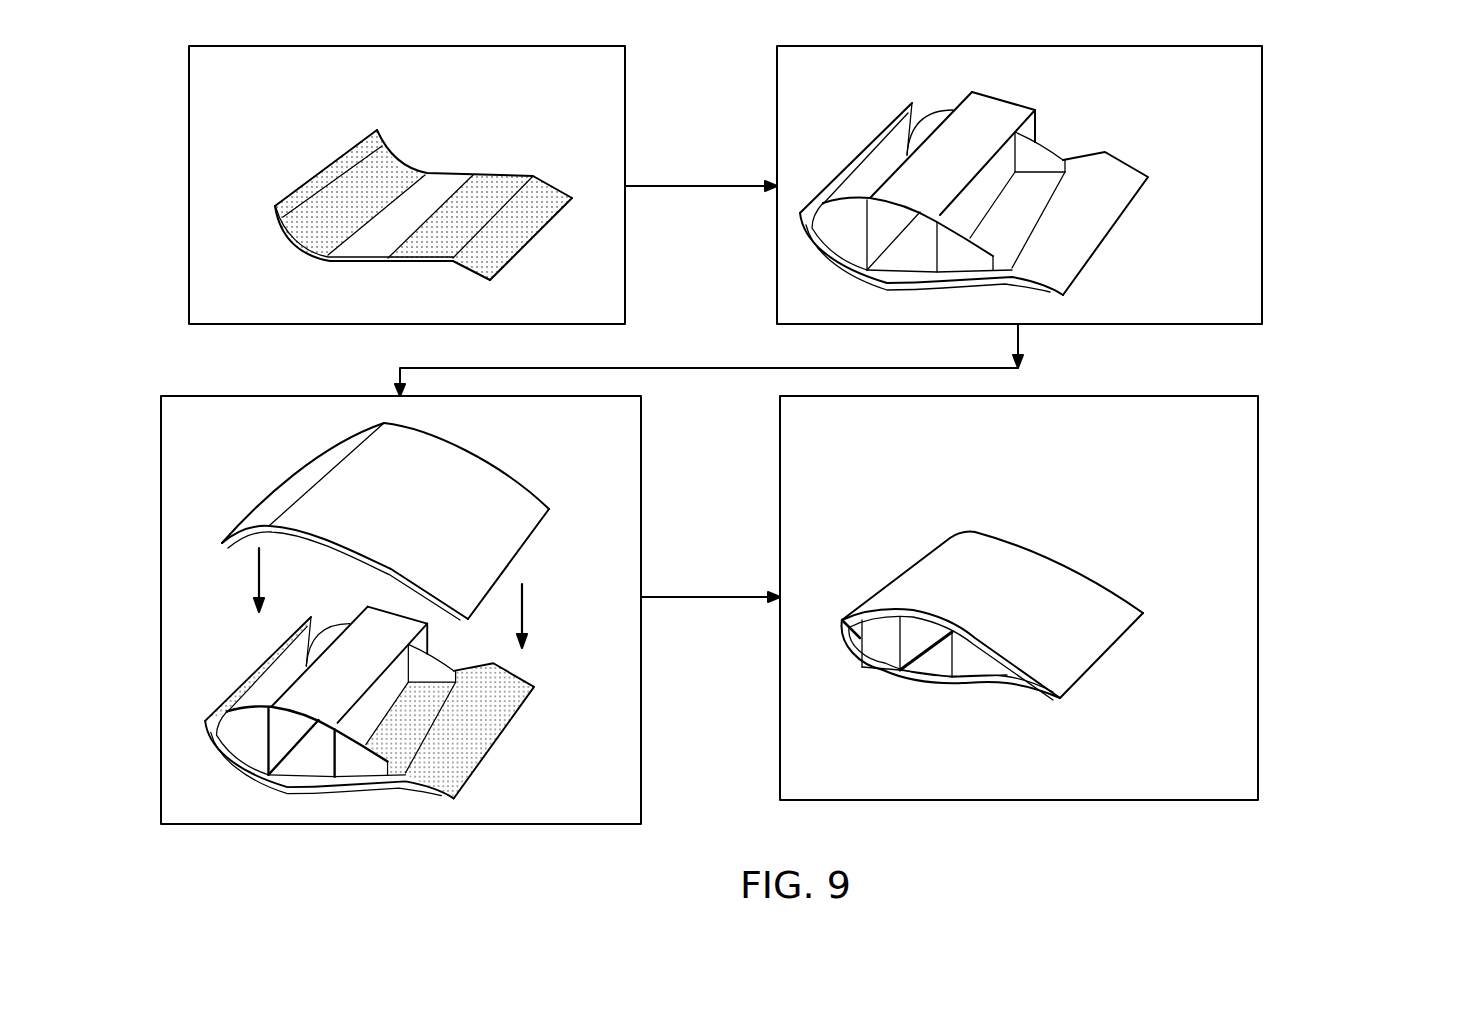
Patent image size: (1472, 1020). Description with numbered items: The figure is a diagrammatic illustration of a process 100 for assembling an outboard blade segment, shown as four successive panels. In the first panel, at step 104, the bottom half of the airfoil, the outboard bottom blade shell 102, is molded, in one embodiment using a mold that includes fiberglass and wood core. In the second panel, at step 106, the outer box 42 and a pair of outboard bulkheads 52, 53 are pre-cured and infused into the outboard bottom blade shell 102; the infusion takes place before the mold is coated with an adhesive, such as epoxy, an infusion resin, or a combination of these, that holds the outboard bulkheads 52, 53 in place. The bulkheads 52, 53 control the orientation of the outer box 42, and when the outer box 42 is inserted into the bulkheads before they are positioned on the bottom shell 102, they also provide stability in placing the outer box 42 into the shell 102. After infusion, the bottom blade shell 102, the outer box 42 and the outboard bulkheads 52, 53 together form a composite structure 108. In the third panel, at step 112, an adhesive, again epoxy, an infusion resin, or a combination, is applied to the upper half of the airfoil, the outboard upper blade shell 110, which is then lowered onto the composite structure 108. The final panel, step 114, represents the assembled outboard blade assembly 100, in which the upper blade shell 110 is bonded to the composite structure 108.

The process for assembling the outboard blade segment 100 is at (1342, 834).
The outboard bottom blade shell 102 is at (542, 188).
The step of molding the bottom blade shell 104 is at (184, 101).
The step of pre-curing and infusing the outer box and bulkheads 106 is at (1270, 141).
The composite structure 108 is at (1000, 292).
The outboard upper blade shell 110 is at (337, 500).
The step of applying adhesive to the upper blade shell 112 is at (155, 463).
The step representing the assembled outboard blade assembly 114 is at (1270, 426).
The outer box 42 is at (1023, 100).
The outboard bulkhead 52 is at (842, 243).
The outboard bulkhead 53 is at (922, 133).